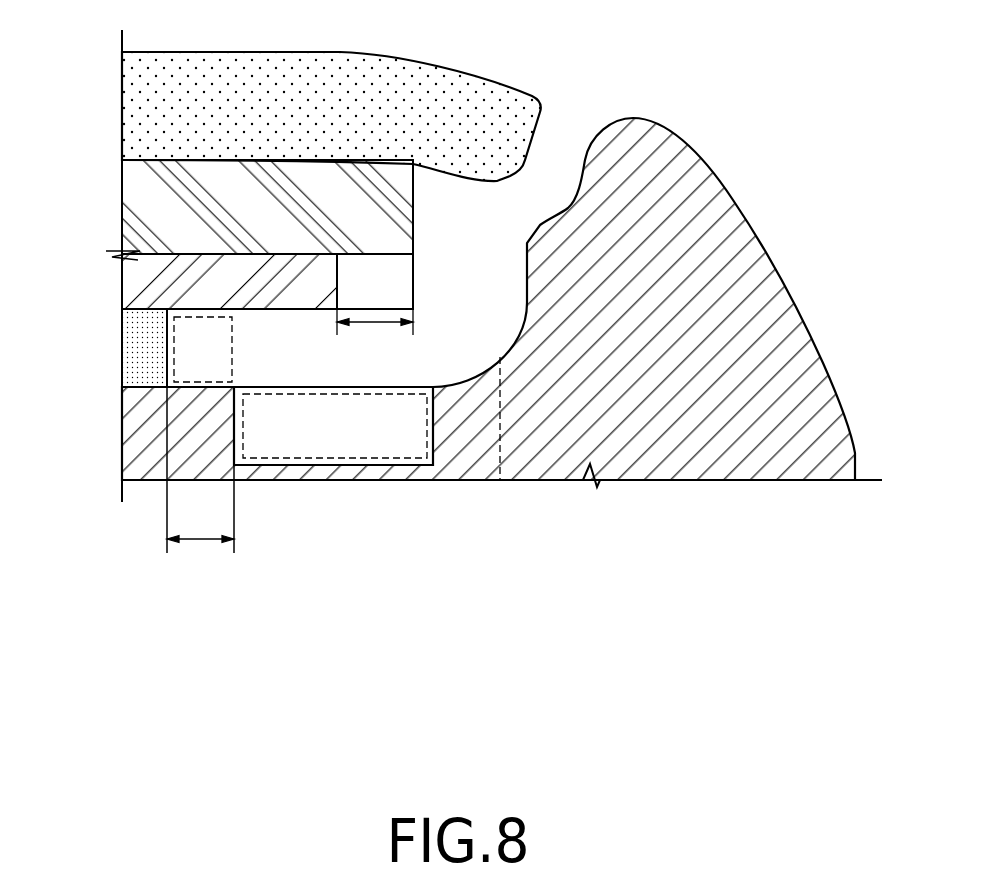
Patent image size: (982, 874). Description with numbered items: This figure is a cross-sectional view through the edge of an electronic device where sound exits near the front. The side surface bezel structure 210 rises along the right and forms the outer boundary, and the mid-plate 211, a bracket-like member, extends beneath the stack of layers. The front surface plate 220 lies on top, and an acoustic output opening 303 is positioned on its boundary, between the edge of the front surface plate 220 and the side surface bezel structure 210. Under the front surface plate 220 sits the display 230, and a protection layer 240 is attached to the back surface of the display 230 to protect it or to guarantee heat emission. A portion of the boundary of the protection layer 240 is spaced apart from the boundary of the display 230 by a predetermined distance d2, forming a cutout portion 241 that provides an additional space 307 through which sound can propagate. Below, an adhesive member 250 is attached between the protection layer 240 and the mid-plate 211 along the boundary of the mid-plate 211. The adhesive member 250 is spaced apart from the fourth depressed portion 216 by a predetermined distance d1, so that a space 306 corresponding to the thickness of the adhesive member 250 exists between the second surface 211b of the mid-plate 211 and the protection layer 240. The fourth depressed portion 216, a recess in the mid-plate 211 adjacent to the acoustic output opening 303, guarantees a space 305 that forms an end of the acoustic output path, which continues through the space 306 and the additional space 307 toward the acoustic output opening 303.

The side surface bezel structure 210 is at (743, 297).
The mid-plate 211 is at (483, 465).
The second surface 211b is at (215, 387).
The fourth depressed portion 216 is at (272, 468).
The front surface plate 220 is at (142, 100).
The display 230 is at (143, 213).
The protection layer 240 is at (143, 288).
The cutout portion 241 is at (338, 280).
The adhesive member 250 is at (137, 352).
The acoustic output opening 303 is at (565, 130).
The space 305 is at (340, 426).
The space 306 is at (195, 355).
The additional space 307 is at (396, 296).
The predetermined distance d1 is at (200, 555).
The predetermined distance d2 is at (375, 332).